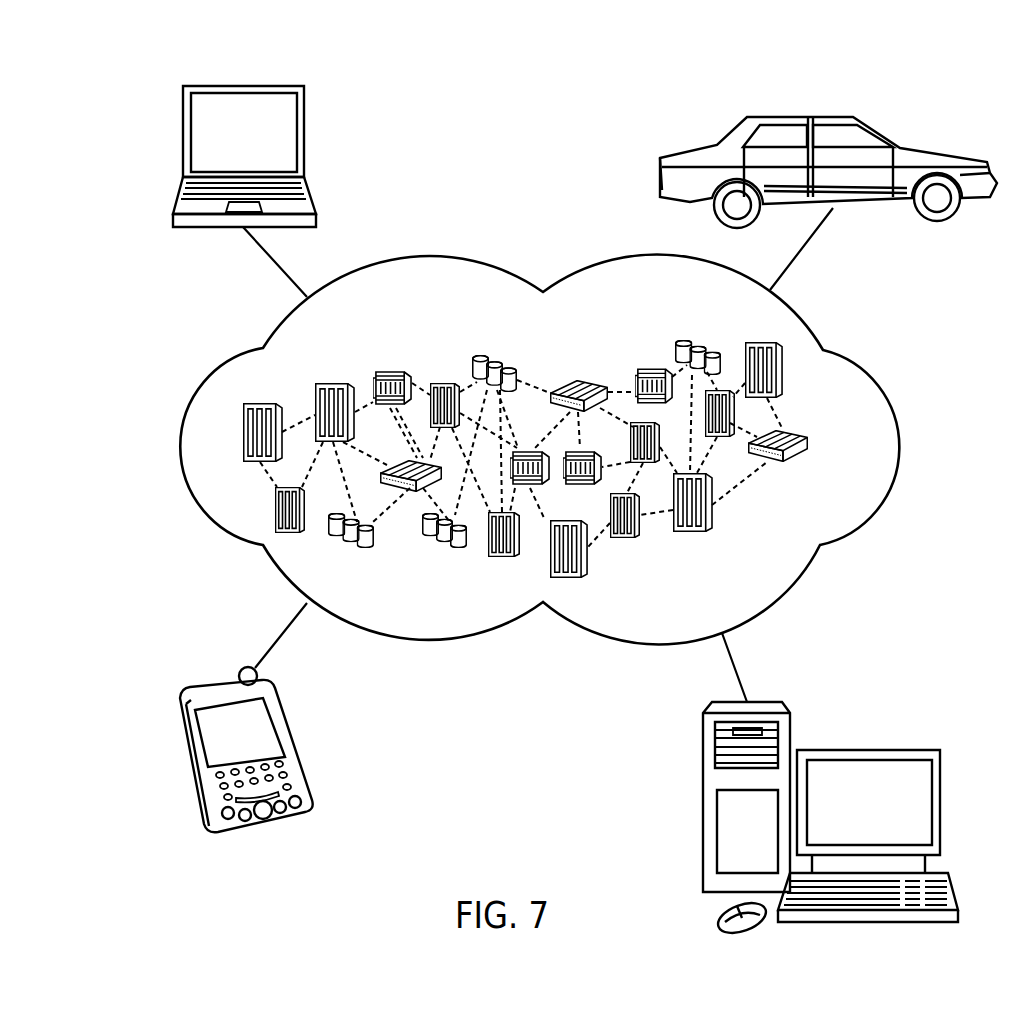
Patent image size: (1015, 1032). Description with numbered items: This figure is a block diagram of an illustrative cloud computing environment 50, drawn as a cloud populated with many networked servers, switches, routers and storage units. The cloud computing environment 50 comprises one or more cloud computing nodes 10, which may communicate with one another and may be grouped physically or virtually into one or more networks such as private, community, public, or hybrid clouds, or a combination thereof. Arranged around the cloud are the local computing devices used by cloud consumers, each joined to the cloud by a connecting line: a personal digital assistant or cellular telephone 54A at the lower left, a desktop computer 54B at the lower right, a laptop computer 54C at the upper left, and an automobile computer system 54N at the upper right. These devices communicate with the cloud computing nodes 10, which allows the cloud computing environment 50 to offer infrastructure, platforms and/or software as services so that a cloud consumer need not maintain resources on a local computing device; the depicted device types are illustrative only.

The cloud computing node 10 is at (818, 446).
The cloud computing environment 50 is at (882, 357).
The personal digital assistant or cellular telephone 54A is at (223, 687).
The desktop computer 54B is at (868, 748).
The laptop computer 54C is at (243, 86).
The automobile computer system 54N is at (803, 113).